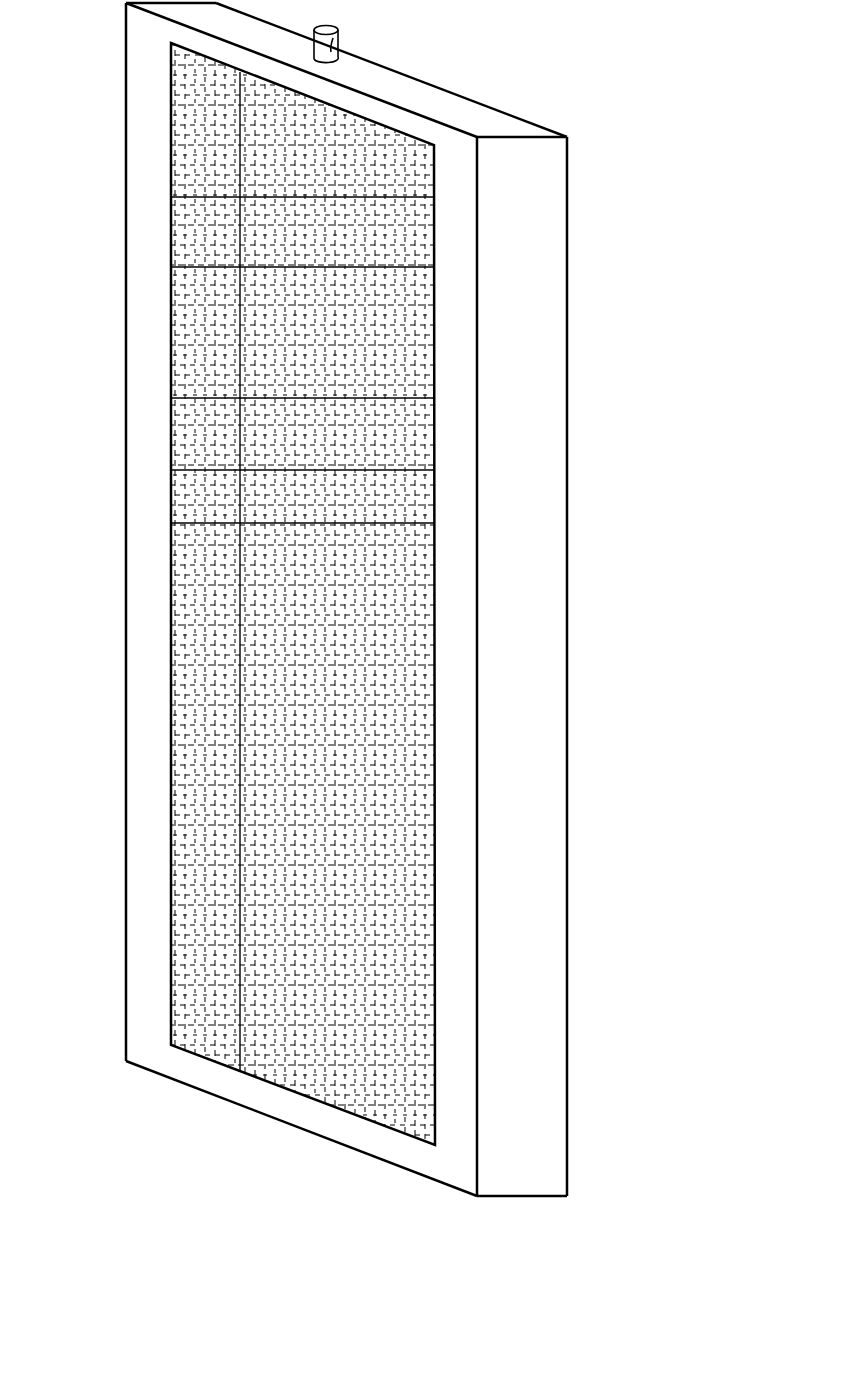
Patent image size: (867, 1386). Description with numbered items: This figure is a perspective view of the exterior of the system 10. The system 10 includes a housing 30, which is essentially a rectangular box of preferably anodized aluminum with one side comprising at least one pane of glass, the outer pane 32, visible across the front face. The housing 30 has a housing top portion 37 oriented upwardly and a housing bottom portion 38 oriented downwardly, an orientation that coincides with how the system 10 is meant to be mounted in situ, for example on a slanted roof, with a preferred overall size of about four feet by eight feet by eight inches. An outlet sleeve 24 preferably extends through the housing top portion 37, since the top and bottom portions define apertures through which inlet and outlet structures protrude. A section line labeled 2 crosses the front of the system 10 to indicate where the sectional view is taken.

The system 10 is at (674, 164).
The outlet sleeve 24 is at (338, 40).
The housing 30 is at (424, 626).
The outer pane 32 is at (198, 193).
The housing top portion 37 is at (465, 113).
The housing bottom portion 38 is at (321, 1136).
The section line 2- 2 is at (651, 771).